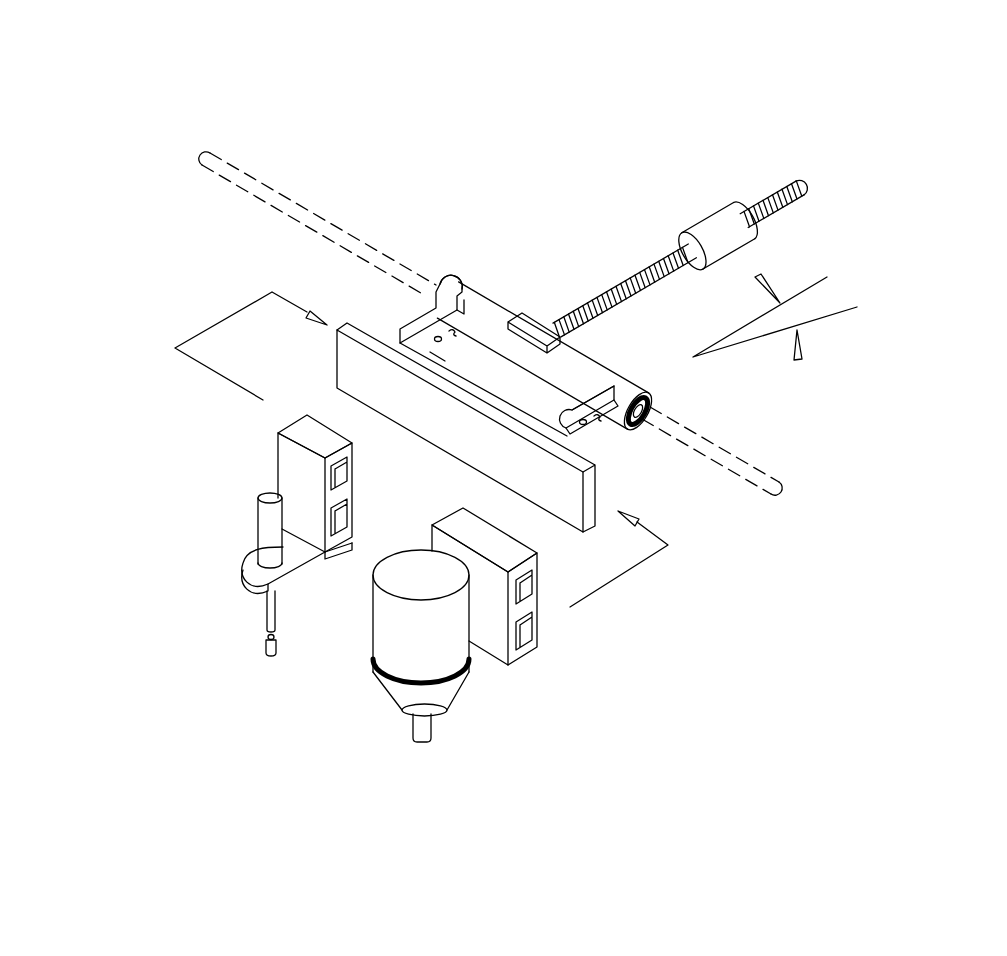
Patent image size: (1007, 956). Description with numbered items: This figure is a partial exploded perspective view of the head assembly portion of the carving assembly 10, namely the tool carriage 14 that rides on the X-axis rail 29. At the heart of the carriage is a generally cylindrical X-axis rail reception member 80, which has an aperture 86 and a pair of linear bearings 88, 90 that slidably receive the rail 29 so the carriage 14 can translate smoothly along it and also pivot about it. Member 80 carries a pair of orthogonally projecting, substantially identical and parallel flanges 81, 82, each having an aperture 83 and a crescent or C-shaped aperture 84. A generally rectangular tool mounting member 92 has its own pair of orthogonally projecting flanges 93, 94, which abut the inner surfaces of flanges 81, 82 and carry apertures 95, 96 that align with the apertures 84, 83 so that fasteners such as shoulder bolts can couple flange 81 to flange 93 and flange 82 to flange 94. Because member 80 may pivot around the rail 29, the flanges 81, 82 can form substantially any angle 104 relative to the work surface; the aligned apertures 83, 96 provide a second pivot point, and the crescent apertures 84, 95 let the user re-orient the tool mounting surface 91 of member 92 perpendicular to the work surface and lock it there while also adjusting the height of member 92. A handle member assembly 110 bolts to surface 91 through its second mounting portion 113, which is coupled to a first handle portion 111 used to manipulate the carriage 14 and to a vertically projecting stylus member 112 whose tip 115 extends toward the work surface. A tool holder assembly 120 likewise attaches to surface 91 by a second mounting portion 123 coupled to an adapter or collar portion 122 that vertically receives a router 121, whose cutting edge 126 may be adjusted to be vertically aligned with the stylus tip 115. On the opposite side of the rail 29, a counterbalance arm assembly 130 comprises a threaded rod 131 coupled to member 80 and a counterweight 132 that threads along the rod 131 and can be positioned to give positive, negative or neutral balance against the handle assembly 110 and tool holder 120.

The apparatus 10 is at (911, 170).
The tool carriage 14 is at (530, 233).
The rail 29 is at (740, 462).
The X-axis rail reception member 80 is at (623, 379).
The flange 81 is at (433, 313).
The flange 82 is at (598, 437).
The aperture 83 is at (578, 396).
The crescent aperture 84 is at (617, 426).
The aperture 86 is at (650, 408).
The linear bearing 88 is at (442, 287).
The linear bearing 90 is at (637, 421).
The tool mounting surface 91 is at (443, 416).
The tool mounting member 92 is at (473, 451).
The flange 93 is at (435, 355).
The flange 94 is at (545, 420).
The aperture 95 is at (455, 328).
The aperture 96 is at (508, 312).
The angle 104 is at (775, 317).
The handle member assembly 110 is at (205, 503).
The first handle portion 111 is at (263, 528).
The stylus member 112 is at (270, 602).
The second mounting portion 113 is at (283, 442).
The tip 115 is at (265, 648).
The tool holder assembly 120 is at (340, 740).
The router 121 is at (382, 622).
The adapter or collar portion 122 is at (458, 685).
The second mounting portion 123 is at (450, 523).
The cutting edge 126 is at (430, 743).
The counterbalance arm assembly 130 is at (750, 160).
The threaded rod 131 is at (782, 203).
The counterweight 132 is at (727, 257).